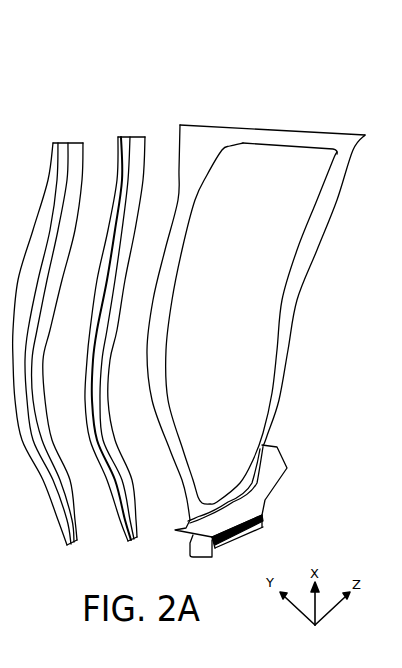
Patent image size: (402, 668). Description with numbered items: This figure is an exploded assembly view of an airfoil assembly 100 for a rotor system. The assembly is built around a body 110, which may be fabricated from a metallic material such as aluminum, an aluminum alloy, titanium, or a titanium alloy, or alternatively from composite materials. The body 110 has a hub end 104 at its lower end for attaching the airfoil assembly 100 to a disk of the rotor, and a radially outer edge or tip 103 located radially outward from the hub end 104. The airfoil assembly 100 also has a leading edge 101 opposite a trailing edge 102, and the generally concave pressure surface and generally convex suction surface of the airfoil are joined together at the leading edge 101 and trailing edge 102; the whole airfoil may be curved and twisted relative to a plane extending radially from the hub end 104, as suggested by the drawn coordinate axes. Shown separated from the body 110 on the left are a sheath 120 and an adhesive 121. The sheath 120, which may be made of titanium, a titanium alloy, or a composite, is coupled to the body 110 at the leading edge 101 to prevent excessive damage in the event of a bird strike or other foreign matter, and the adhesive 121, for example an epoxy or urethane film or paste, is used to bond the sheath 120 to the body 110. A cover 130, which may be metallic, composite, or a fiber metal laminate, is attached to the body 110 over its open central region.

The airfoil assembly 100 is at (139, 58).
The leading edge 101 is at (182, 523).
The trailing edge 102 is at (358, 160).
The tip 103 is at (316, 128).
The hub end 104 is at (250, 503).
The body 110 is at (200, 137).
The sheath 120 is at (72, 147).
The adhesive 121 is at (135, 143).
The cover 130 is at (265, 167).